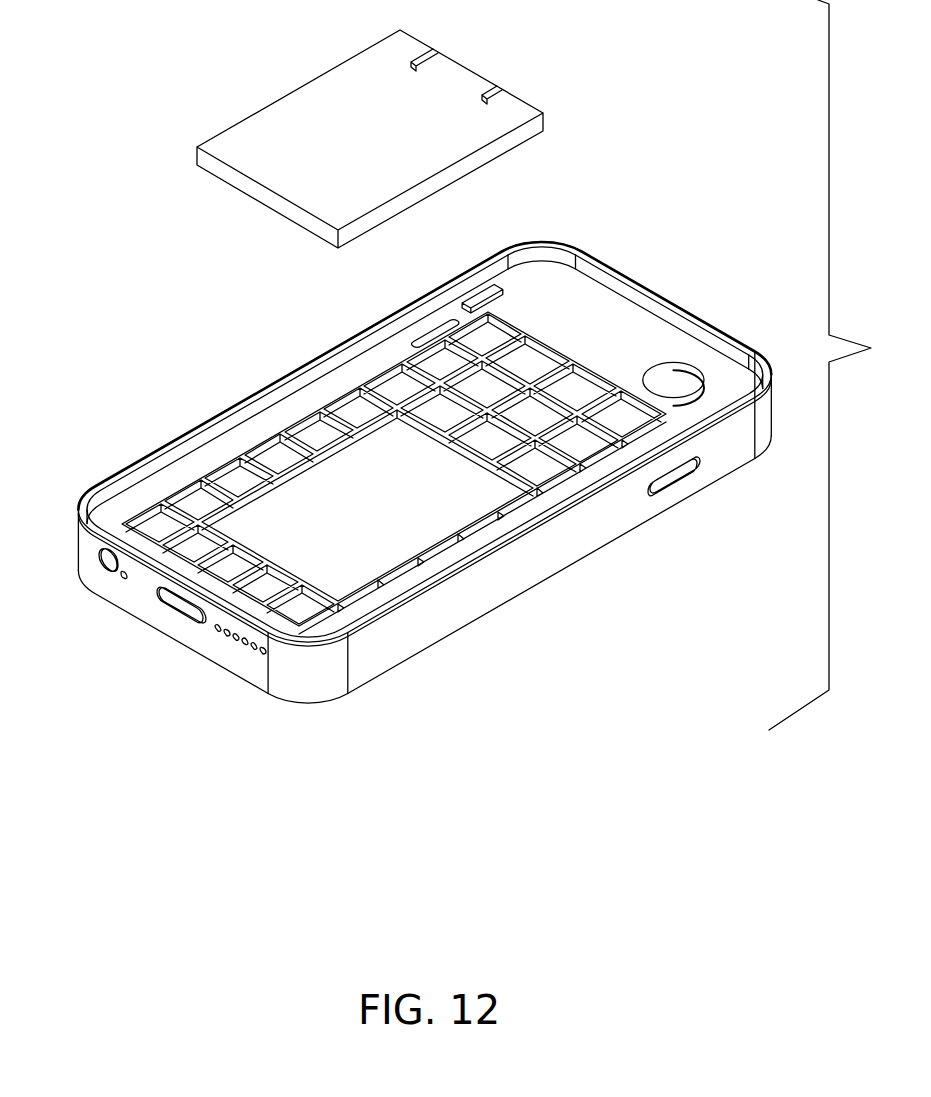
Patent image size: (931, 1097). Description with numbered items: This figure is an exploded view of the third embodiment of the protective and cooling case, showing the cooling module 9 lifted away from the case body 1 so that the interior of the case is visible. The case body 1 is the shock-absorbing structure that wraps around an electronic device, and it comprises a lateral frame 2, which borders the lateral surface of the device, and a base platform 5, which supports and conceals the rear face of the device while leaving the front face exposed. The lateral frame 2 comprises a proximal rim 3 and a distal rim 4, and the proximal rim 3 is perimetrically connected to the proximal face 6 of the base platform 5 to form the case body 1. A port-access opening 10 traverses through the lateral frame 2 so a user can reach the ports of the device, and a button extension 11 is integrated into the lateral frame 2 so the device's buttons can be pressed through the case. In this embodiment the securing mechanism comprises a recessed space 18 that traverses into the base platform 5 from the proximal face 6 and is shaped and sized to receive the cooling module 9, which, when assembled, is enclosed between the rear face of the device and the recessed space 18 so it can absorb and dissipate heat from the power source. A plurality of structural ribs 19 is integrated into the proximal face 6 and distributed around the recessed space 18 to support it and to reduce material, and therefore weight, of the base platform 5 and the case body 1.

The case body 1 is at (676, 204).
The lateral frame 2 is at (398, 294).
The proximal rim 3 is at (533, 282).
The distal rim 4 is at (528, 243).
The base platform 5 is at (600, 565).
The proximal face 6 is at (626, 353).
The cooling module 9 is at (305, 45).
The port-access opening 10 is at (178, 605).
The button extension 11 is at (670, 478).
The recessed space 18 is at (325, 480).
The structural ribs 19 is at (410, 400).